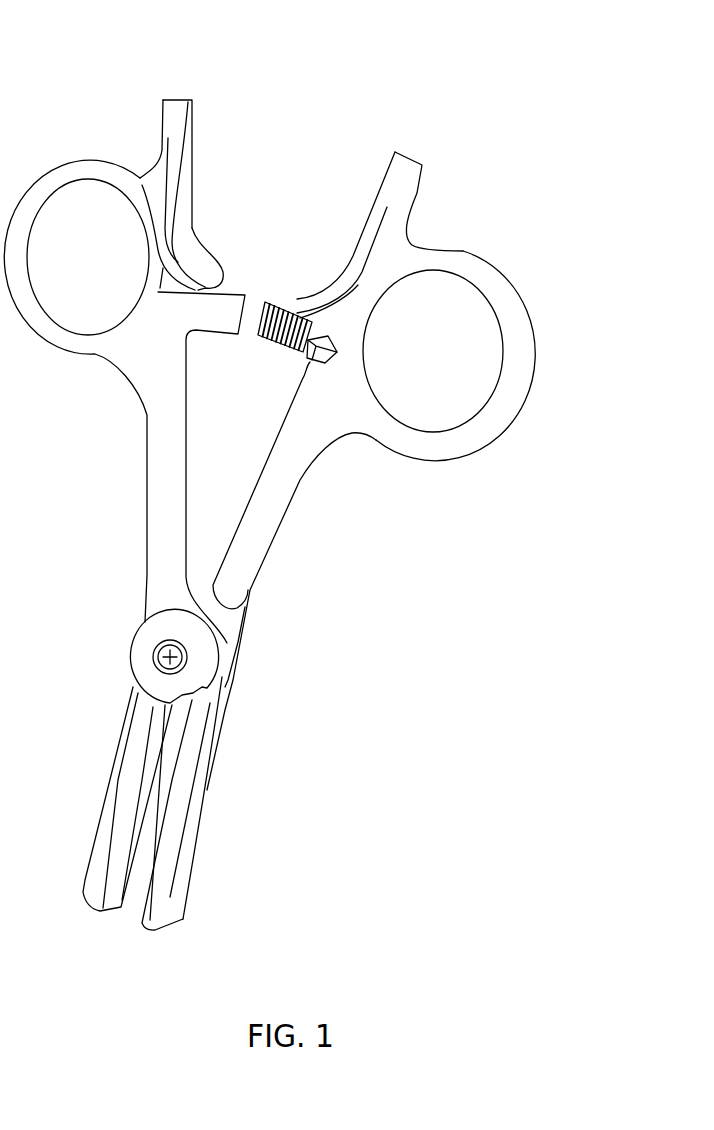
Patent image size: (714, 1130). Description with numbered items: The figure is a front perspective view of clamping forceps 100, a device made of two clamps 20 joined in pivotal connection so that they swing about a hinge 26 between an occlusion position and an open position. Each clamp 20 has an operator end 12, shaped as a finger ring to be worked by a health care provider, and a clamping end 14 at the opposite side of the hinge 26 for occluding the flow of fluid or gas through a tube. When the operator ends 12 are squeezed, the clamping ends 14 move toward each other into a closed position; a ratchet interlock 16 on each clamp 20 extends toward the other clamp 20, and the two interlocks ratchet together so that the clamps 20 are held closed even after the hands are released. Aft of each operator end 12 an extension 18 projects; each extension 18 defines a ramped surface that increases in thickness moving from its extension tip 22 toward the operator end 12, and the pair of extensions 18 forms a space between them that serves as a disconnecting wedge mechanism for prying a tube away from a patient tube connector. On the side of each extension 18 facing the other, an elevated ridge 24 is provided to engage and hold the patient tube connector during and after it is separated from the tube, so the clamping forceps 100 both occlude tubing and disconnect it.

The clamping forceps 100 is at (313, 58).
The operator end 12 is at (533, 340).
The clamping end 14 is at (198, 833).
The ratchet interlock 16 is at (295, 303).
The extension 18 is at (415, 197).
The clamp 20 is at (150, 496).
The extension tip 22 is at (190, 100).
The ridge 24 is at (175, 258).
The hinge 26 is at (178, 657).